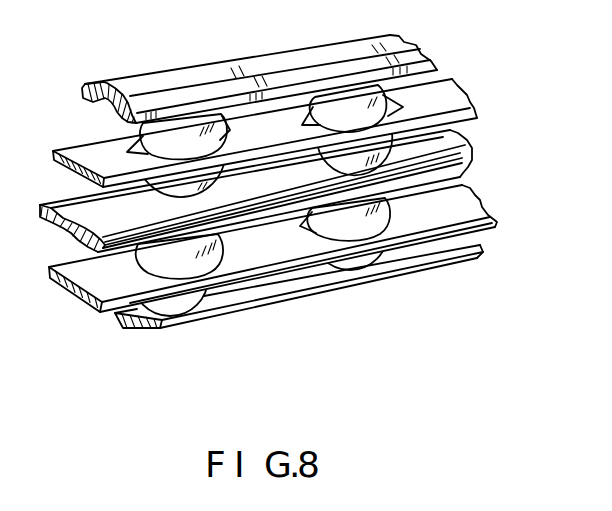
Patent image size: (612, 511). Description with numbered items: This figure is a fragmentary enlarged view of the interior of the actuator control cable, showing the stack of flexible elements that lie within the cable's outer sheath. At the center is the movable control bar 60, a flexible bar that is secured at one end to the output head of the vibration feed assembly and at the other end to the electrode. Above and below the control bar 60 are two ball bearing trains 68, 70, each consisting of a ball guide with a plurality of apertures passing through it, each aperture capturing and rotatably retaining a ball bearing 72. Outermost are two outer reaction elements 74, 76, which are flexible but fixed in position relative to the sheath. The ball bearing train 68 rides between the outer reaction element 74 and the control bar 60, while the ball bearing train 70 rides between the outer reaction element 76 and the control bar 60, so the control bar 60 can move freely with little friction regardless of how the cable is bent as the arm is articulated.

The control bar 60 is at (455, 153).
The ball bearing train 68 is at (465, 100).
The ball bearing train 70 is at (258, 260).
The ball bearings 72 is at (160, 137).
The outer reaction element 74 is at (152, 80).
The outer reaction element 76 is at (306, 295).